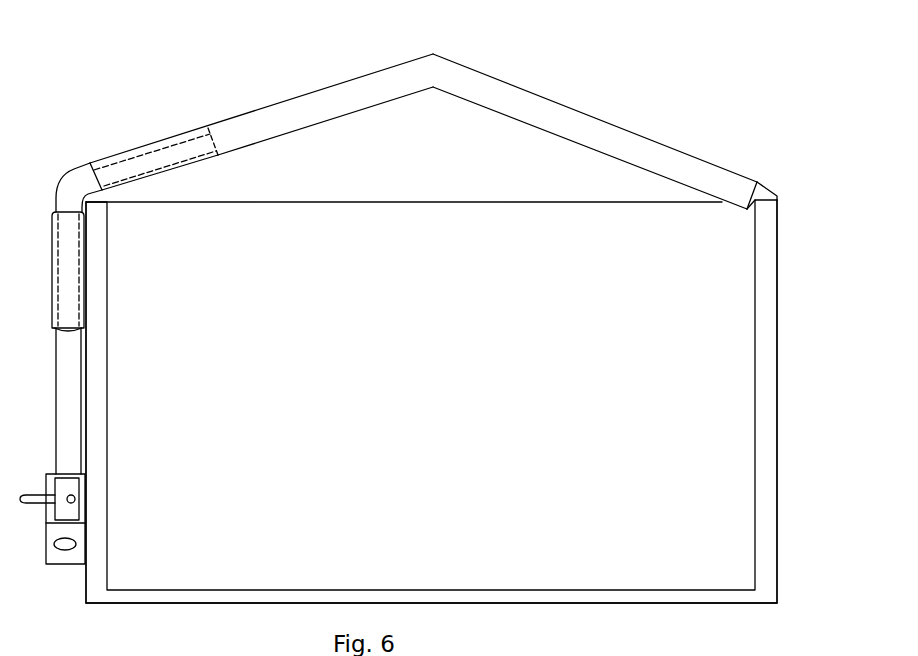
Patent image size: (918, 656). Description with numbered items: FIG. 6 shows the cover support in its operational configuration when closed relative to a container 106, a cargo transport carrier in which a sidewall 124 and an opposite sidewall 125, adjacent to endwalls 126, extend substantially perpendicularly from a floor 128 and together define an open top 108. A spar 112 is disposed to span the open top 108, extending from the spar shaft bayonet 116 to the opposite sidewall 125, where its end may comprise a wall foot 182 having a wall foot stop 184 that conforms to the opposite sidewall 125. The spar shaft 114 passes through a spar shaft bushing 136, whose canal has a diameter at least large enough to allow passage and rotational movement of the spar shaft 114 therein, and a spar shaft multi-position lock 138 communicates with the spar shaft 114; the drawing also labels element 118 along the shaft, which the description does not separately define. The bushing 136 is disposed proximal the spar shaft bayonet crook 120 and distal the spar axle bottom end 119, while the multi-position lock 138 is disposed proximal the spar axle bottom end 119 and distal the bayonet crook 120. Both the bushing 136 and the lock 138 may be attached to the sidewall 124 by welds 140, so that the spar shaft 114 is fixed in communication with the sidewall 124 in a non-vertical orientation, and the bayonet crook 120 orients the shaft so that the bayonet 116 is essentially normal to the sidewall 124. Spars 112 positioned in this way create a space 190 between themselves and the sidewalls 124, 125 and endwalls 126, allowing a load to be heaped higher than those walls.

The container 106 is at (782, 227).
The open top 108 is at (485, 218).
The spar 112 is at (433, 73).
The spar shaft 114 is at (72, 458).
The spar shaft bayonet 116 is at (162, 157).
The tube 118 is at (70, 312).
The spar axle bottom end 119 is at (72, 548).
The spar shaft bayonet crook 120 is at (58, 180).
The sidewall 124 is at (98, 418).
The opposite sidewall 125 is at (767, 430).
The endwalls 126 is at (482, 347).
The floor 128 is at (420, 592).
The spar shaft bushing 136 is at (72, 270).
The spar shaft multi-position lock 138 is at (77, 483).
The welds 140 is at (85, 247).
The wall foot 182 is at (763, 187).
The wall foot stop 184 is at (753, 210).
The space 190 is at (327, 176).